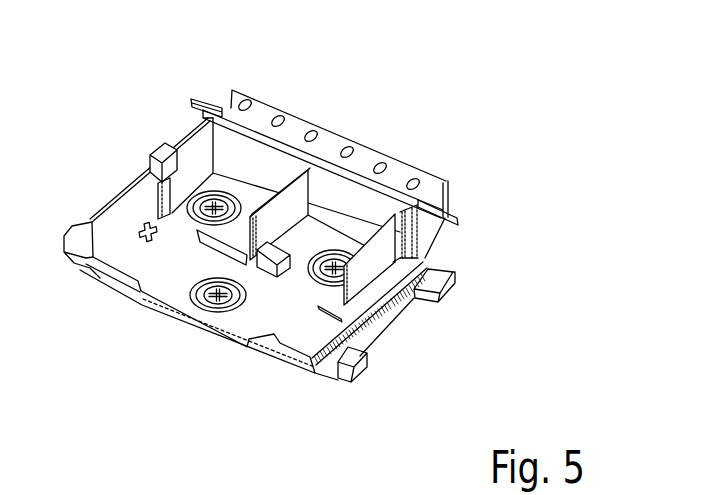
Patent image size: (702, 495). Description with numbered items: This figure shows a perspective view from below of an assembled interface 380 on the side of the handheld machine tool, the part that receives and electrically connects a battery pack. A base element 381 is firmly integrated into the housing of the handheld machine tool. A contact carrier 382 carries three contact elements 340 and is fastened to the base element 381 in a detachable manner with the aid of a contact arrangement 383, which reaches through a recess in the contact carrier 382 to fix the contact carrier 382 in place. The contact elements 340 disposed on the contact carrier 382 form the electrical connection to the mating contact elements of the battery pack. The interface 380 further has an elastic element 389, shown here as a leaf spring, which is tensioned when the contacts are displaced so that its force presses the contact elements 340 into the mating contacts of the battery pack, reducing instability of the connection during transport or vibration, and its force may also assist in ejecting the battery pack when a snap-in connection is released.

The interface 380 is at (294, 240).
The base element 381 is at (440, 272).
The contact carrier 382 is at (307, 335).
The contact arrangement 383 is at (217, 302).
The elastic element 389 is at (196, 99).
The contact element 340 is at (157, 198).